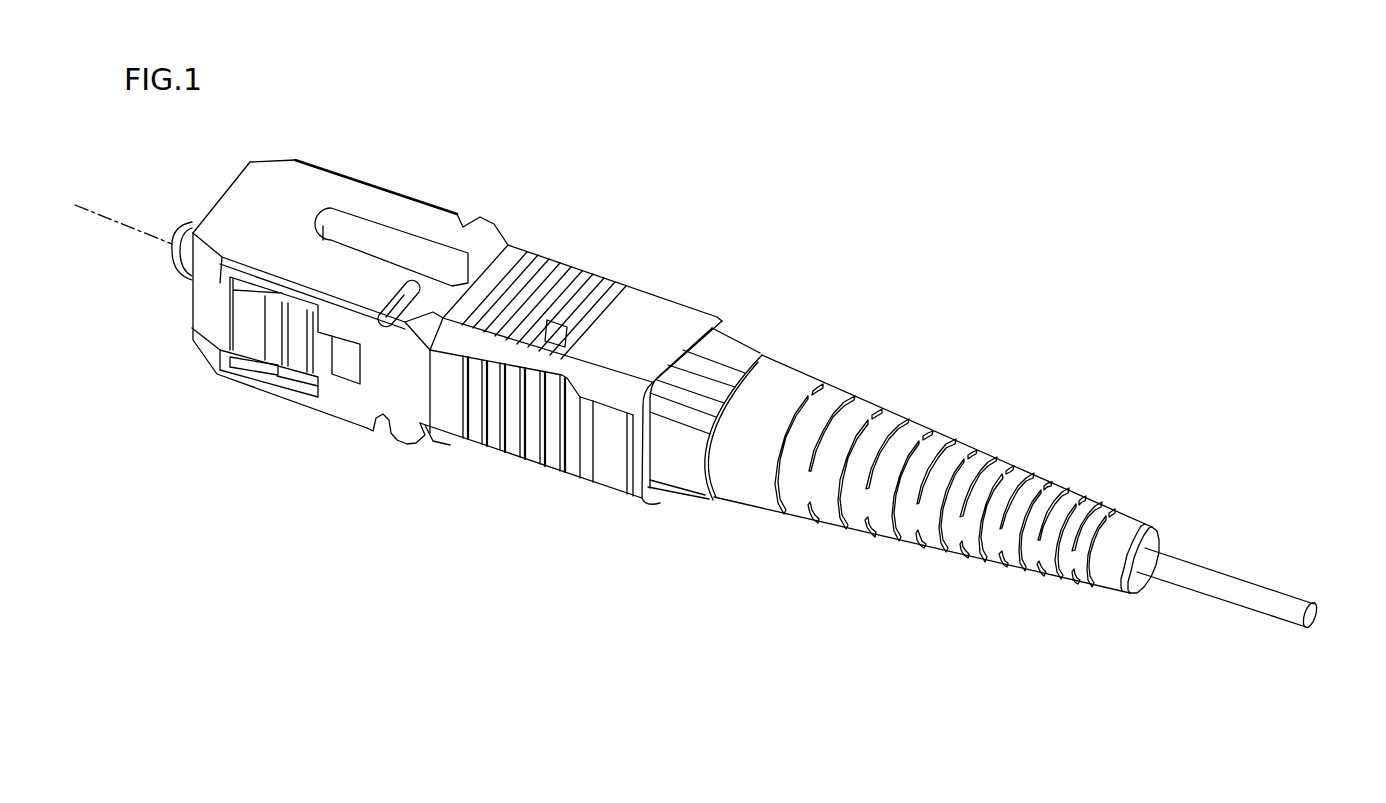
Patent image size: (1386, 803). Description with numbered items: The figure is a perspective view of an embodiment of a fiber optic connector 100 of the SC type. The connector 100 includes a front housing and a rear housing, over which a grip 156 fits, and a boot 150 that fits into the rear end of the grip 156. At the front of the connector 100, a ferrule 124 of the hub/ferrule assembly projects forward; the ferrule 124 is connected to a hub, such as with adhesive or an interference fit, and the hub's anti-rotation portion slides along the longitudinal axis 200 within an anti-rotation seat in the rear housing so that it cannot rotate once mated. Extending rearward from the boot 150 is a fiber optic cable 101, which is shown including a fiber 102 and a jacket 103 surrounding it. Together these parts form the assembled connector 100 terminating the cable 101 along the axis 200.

The connector 100 is at (662, 197).
The fiber optic cable 101 is at (1237, 577).
The fiber 102 is at (1316, 616).
The jacket 103 is at (1250, 607).
The ferrule 124 is at (183, 270).
The boot 150 is at (810, 376).
The grip 156 is at (372, 187).
The longitudinal axis 200 is at (87, 210).